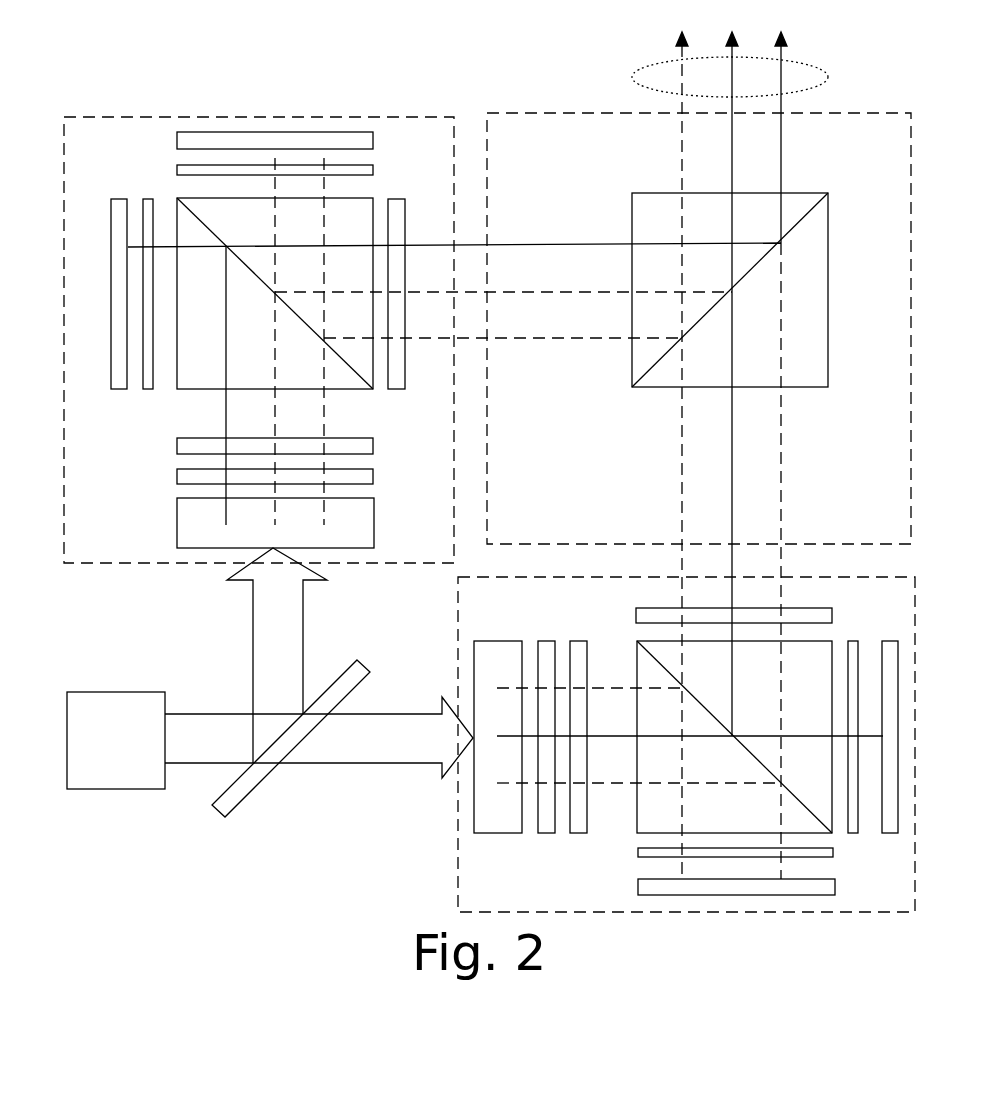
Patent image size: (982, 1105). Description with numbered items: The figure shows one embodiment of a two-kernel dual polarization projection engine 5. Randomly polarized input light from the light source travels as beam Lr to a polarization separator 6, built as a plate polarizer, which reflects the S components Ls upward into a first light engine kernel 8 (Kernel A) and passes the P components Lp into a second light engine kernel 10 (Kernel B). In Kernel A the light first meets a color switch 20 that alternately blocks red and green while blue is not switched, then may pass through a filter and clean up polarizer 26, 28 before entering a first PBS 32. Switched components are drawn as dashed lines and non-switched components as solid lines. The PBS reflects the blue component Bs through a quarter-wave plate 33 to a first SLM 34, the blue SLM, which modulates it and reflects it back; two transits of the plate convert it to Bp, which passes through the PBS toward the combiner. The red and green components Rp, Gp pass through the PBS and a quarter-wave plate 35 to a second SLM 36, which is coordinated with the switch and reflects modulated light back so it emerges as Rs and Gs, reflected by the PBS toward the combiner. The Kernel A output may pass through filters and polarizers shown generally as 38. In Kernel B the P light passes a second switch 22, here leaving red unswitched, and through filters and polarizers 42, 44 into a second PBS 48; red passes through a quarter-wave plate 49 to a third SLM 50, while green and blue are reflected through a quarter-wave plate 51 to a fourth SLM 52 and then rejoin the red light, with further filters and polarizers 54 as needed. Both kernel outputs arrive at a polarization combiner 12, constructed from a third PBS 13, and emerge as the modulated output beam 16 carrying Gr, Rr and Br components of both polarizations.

The two-kernel dual polarization projection engine 5 is at (327, 903).
The polarization separator 6 is at (224, 817).
The first light engine kernel 8 is at (416, 514).
The second light engine kernel 10 is at (590, 601).
The polarization combiner 12 is at (556, 427).
The third PBS 13 is at (645, 232).
The modulated output beam 16 is at (632, 77).
The color switch 20 is at (177, 506).
The second switch 22 is at (502, 834).
The filter 26 is at (177, 476).
The clean up polarizer 28 is at (177, 446).
The first PBS 32 is at (221, 232).
The quarter-wave plate 33 is at (148, 199).
The first SLM 34 is at (118, 199).
The quarter-wave plate 35 is at (375, 170).
The second SLM 36 is at (375, 139).
The filters and polarizers 38 is at (405, 214).
The filters and polarizers 42 is at (544, 641).
The filters and polarizers 44 is at (576, 641).
The second PBS 48 is at (795, 696).
The quarter-wave plate 49 is at (853, 641).
The third SLM 50 is at (889, 641).
The quarter-wave plate 51 is at (638, 853).
The fourth SLM 52 is at (638, 884).
The filters and polarizers 54 is at (798, 608).